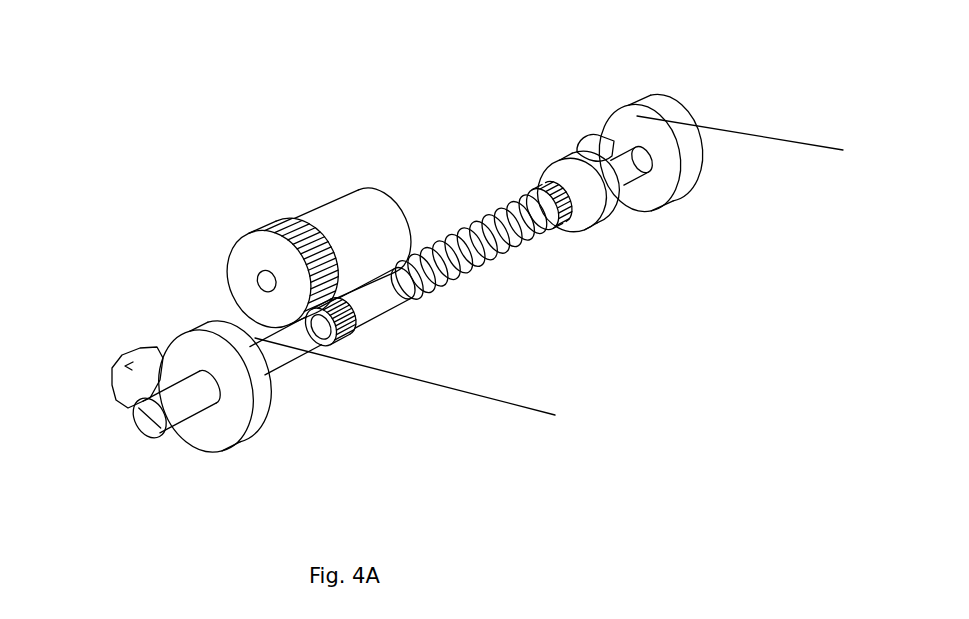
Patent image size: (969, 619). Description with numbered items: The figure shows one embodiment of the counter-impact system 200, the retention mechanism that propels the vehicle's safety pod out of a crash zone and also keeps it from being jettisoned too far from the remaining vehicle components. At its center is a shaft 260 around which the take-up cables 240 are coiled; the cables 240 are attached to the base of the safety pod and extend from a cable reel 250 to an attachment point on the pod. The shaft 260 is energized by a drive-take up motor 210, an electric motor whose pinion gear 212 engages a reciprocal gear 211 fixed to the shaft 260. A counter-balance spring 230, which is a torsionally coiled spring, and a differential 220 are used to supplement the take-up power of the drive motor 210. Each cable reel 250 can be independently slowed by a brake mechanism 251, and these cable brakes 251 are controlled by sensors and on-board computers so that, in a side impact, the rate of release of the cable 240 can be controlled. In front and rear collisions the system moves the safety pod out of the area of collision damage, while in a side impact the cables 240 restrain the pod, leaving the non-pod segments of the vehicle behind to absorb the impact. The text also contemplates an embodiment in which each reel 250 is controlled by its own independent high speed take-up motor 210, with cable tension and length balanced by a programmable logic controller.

The counter-impact system 200 is at (565, 133).
The drive-take up motor 210 is at (406, 211).
The reciprocal gear 211 is at (360, 337).
The pinion gear 212 is at (247, 237).
The differential 220 is at (566, 231).
The counter-balance spring 230 is at (523, 255).
The take-up cable 240 is at (470, 400).
The cable reel 250 is at (240, 445).
The brake mechanism 251 is at (112, 370).
The shaft 260 is at (578, 150).